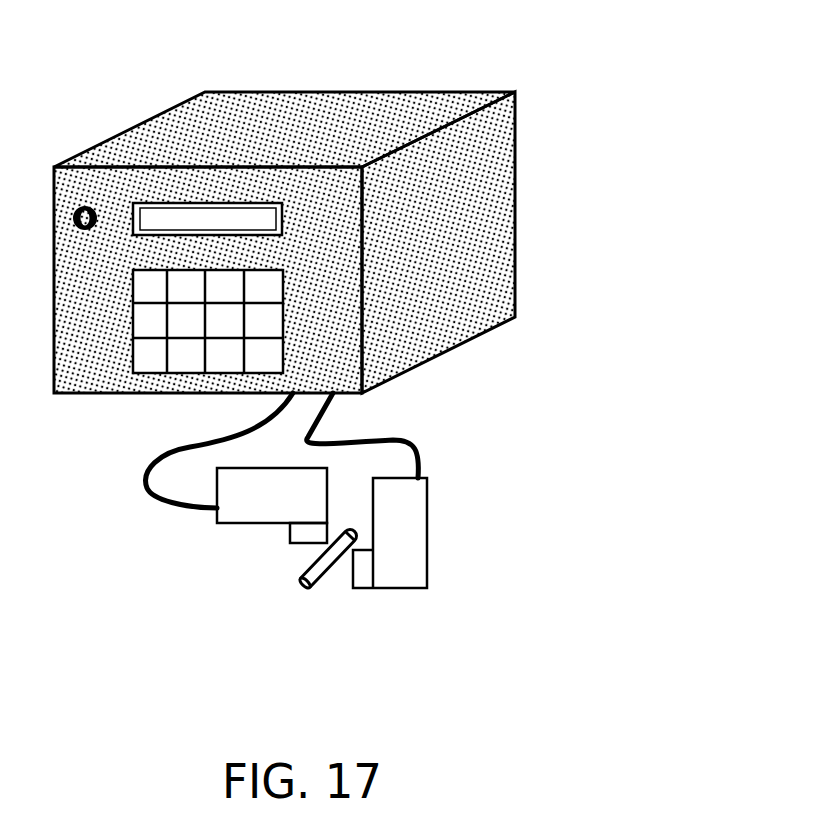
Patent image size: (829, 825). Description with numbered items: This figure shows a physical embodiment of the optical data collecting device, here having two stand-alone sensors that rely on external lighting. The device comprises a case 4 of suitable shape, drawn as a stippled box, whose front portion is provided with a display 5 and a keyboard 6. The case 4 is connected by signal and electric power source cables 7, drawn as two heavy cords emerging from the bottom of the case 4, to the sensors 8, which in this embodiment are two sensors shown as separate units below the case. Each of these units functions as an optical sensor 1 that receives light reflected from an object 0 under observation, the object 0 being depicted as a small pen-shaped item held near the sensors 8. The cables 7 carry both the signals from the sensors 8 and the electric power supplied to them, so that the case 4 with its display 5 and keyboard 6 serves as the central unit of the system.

The case 4 is at (500, 203).
The display 5 is at (170, 218).
The keyboard 6 is at (148, 365).
The signal and electric power source cables 7 is at (282, 405).
The sensors 8 is at (402, 573).
The object 0 is at (305, 588).
The optical sensor 1 is at (352, 535).